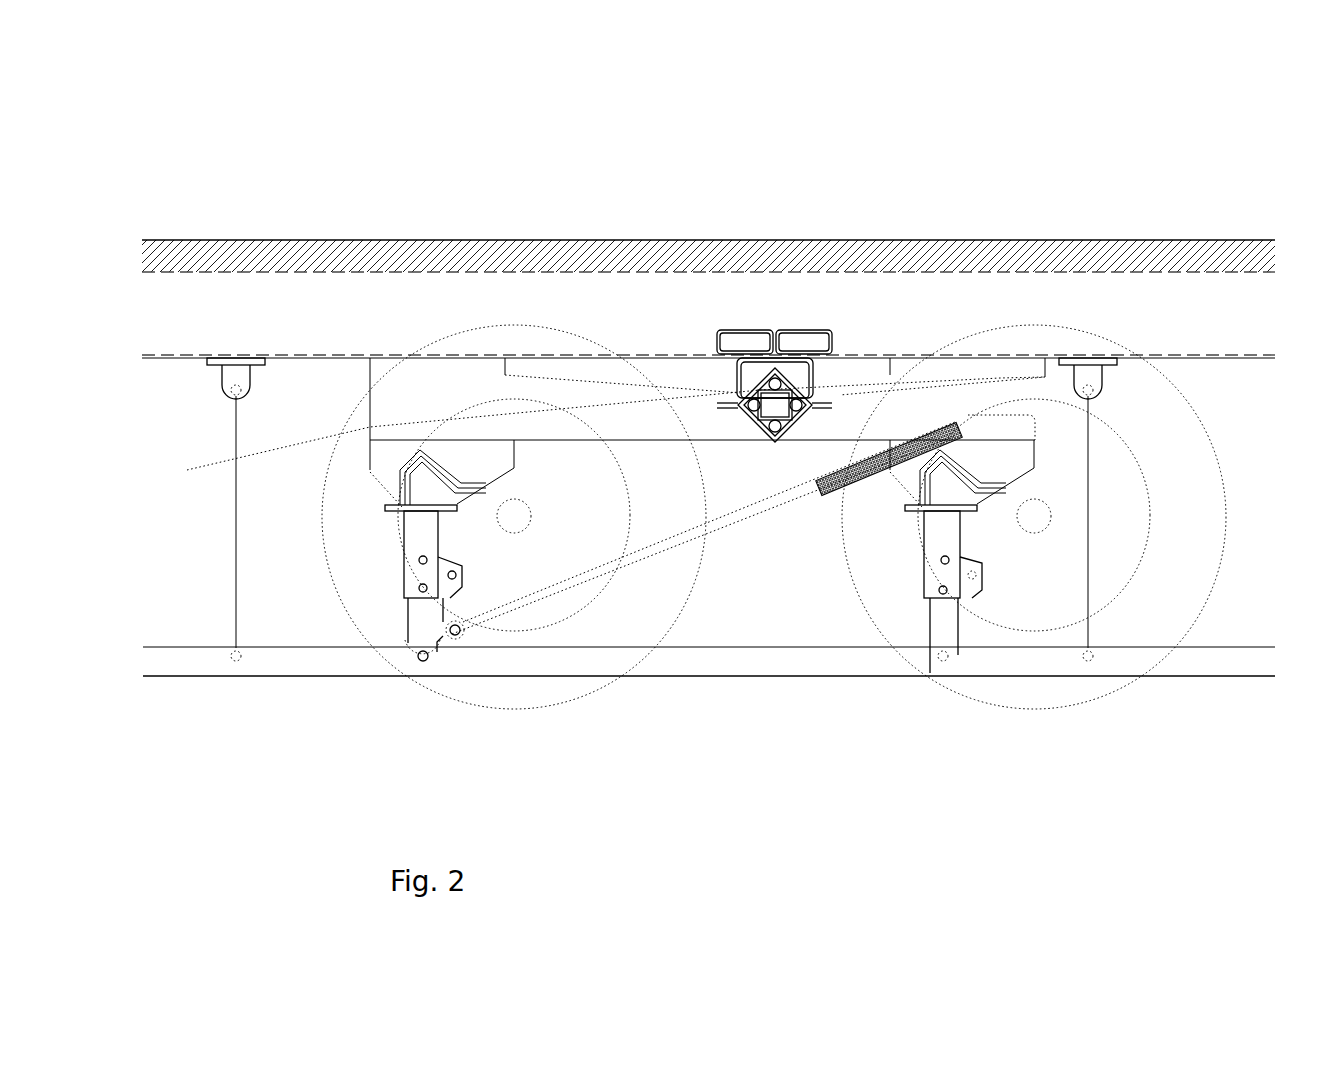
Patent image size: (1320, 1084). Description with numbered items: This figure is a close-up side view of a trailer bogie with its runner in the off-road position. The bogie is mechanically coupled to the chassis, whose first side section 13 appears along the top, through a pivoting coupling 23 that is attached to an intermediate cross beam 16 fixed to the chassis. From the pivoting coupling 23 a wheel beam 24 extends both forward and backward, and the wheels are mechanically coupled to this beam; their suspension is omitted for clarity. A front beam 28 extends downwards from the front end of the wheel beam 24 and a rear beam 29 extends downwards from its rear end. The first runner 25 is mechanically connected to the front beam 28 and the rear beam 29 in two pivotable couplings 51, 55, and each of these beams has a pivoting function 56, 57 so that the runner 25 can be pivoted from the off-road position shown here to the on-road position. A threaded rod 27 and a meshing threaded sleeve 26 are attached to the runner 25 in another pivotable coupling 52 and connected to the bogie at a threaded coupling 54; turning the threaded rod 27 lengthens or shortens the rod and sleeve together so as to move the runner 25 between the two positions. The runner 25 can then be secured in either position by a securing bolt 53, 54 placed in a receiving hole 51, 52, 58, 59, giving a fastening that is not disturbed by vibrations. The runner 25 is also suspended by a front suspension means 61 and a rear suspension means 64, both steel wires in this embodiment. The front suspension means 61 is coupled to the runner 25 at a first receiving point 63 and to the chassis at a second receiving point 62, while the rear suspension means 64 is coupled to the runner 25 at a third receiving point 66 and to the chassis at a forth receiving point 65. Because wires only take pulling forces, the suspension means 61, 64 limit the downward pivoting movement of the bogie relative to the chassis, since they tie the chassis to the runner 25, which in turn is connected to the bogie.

The first side section 13 is at (708, 243).
The intermediate cross beam 16 is at (707, 285).
The pivoting coupling 23 is at (727, 281).
The wheel beam 24 is at (687, 402).
The first runner 25 is at (709, 716).
The threaded sleeve 26 is at (703, 597).
The threaded rod 27 is at (940, 664).
The front beam 28 is at (425, 619).
The rear beam 29 is at (1039, 697).
The pivotable coupling 51 is at (470, 720).
The pivotable coupling 52 is at (512, 705).
The securing bolt 53 is at (576, 673).
The threaded coupling 54 is at (651, 487).
The pivotable coupling 55 is at (973, 703).
The pivoting function 56 is at (588, 467).
The pivoting function 57 is at (1017, 684).
The receiving hole 58 is at (1091, 516).
The receiving hole 59 is at (1060, 665).
The front suspension means 61 is at (177, 522).
The second receiving point 62 is at (287, 252).
The first receiving point 63 is at (274, 731).
The rear suspension means 64 is at (1055, 517).
The forth receiving point 65 is at (1024, 280).
The third receiving point 66 is at (1138, 719).